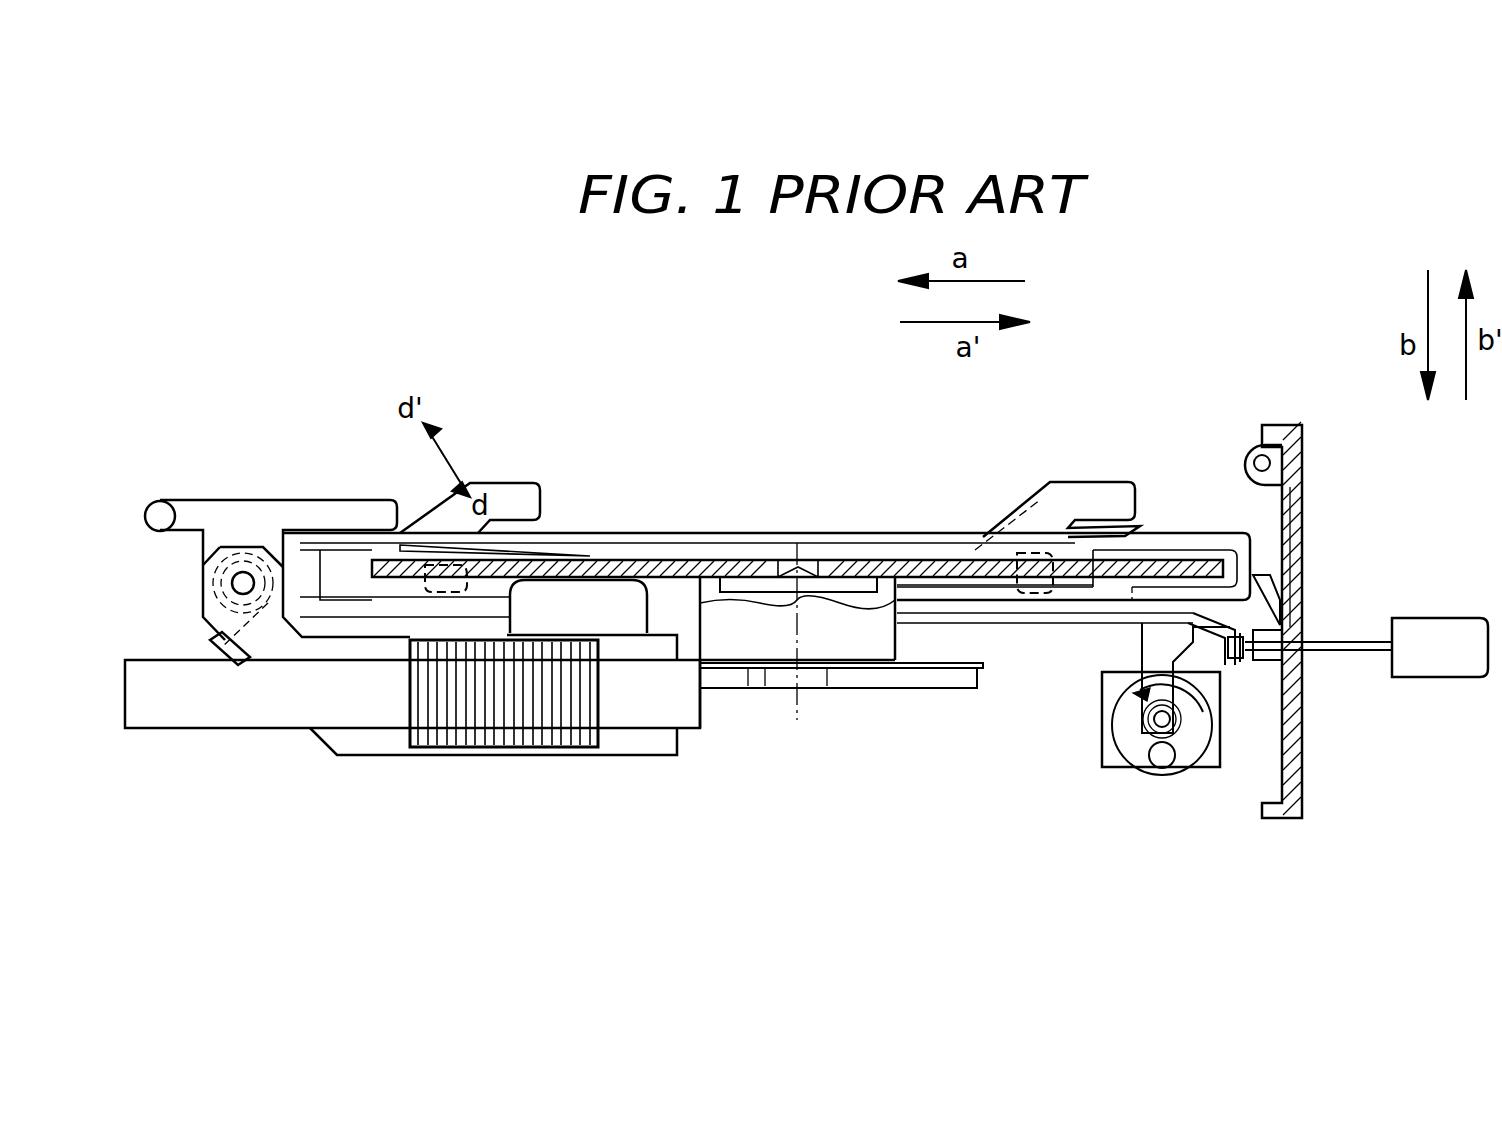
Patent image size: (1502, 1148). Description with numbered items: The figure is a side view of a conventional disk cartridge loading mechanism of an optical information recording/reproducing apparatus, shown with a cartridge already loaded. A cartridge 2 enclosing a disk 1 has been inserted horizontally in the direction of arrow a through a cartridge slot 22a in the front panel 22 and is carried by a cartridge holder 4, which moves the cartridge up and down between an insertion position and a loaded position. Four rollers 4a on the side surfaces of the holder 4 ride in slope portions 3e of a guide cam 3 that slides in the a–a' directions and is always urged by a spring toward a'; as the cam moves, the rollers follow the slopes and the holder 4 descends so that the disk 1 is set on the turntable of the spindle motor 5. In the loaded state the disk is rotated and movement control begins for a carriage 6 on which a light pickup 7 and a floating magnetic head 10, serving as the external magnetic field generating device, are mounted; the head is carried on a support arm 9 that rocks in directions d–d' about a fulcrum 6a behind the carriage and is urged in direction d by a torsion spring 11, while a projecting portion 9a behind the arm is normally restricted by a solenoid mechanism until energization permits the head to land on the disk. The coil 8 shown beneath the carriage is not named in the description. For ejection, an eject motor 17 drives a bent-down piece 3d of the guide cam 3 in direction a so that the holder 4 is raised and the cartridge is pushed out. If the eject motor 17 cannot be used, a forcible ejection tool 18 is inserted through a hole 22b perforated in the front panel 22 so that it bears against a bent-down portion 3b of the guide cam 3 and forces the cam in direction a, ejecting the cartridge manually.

The disk recording medium 1 is at (1158, 568).
The cartridge 2 is at (1248, 548).
The guide cam 3 is at (1085, 640).
The bent-down portion 3b is at (1238, 662).
The bent-down piece 3d is at (1150, 685).
The slope portion 3e is at (520, 518).
The cartridge holder 4 is at (915, 533).
The roller 4a is at (450, 572).
The spindle motor 5 is at (825, 672).
The carriage 6 is at (668, 740).
The fulcrum 6a is at (246, 578).
The light pickup 7 is at (620, 600).
The coil 8 is at (560, 738).
The support arm 9 is at (252, 508).
The projecting portion 9a is at (162, 500).
The floating magnetic head 10 is at (575, 560).
The torsion spring 11 is at (214, 645).
The eject motor 17 is at (1130, 770).
The forcible ejection tool 18 is at (1355, 645).
The front panel 22 is at (1305, 770).
The cartridge slot 22a is at (1305, 545).
The hole 22b is at (1300, 655).